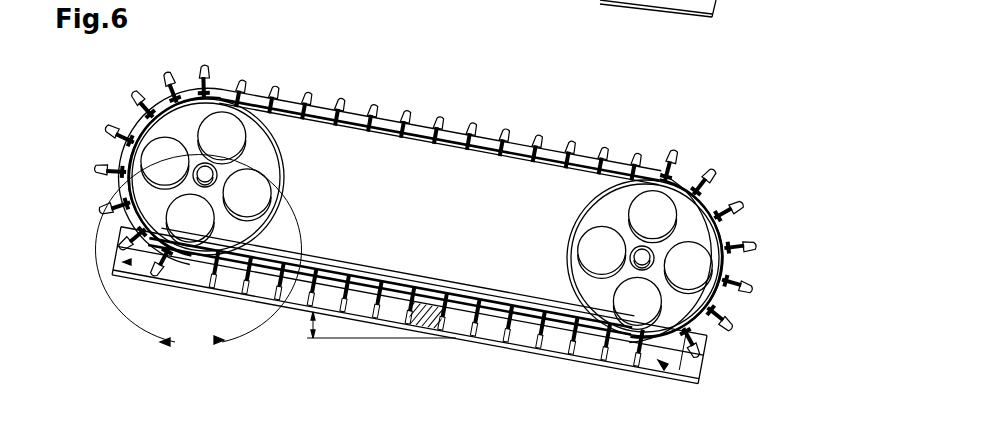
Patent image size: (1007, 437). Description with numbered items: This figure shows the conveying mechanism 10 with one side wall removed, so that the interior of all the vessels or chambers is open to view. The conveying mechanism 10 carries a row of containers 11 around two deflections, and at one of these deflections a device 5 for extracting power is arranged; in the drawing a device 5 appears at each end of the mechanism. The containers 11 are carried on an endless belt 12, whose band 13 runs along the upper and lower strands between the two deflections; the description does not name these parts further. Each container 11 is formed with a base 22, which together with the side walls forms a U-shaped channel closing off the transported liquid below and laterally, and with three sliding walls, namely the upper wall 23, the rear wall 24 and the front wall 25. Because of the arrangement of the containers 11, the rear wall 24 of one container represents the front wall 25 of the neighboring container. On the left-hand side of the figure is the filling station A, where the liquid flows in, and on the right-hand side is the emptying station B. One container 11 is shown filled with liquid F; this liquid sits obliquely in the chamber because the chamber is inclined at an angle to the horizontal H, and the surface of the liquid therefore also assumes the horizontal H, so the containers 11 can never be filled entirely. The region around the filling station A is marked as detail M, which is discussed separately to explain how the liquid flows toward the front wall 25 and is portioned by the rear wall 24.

The conveying mechanism 10 is at (263, 73).
The device for extracting power 5 is at (277, 165).
The belt 12 is at (470, 157).
The belt band 13 is at (401, 140).
The front wall 25 is at (407, 104).
The upper wall 23 is at (415, 132).
The rear wall 24 is at (442, 117).
The base 22 is at (519, 338).
The container 11 is at (562, 334).
The filling station A is at (96, 262).
The emptying station B is at (663, 366).
The liquid F is at (416, 319).
The horizontal H is at (437, 303).
The detail M is at (192, 348).